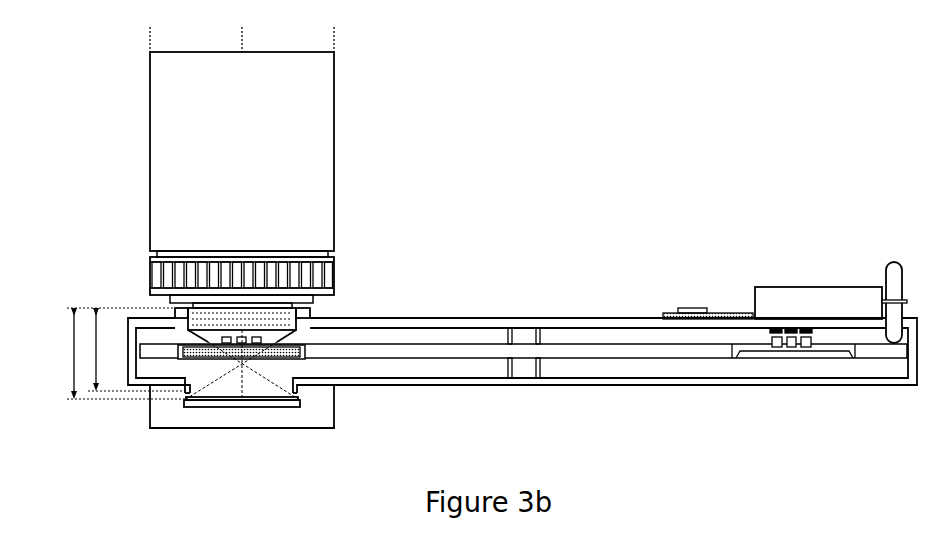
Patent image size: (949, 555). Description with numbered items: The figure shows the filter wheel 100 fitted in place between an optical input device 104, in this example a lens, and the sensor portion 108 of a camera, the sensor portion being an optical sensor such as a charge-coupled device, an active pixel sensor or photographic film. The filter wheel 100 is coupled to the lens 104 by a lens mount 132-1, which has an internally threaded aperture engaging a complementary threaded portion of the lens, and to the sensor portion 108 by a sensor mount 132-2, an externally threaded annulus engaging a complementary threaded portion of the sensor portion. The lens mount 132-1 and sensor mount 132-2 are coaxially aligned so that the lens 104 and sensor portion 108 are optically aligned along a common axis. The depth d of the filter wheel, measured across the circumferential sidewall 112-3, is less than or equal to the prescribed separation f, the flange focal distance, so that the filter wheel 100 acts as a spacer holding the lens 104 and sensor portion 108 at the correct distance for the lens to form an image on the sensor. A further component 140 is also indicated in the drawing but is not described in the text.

The filter wheel 100 is at (660, 182).
The optical input device 104 is at (334, 122).
The field of view region 140 is at (242, 44).
The circumferential sidewall 112-3 is at (128, 318).
The lens mount 132-1 is at (311, 316).
The sensor mount 132-2 is at (298, 401).
The sensor portion 108 is at (218, 407).